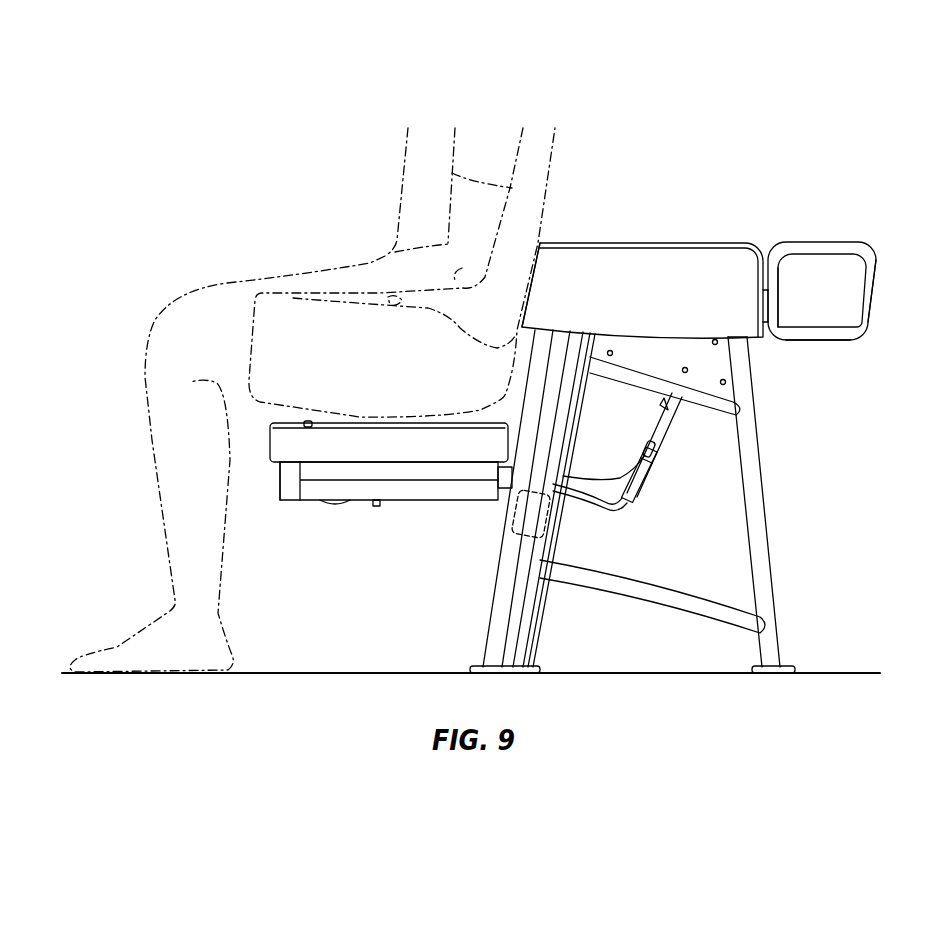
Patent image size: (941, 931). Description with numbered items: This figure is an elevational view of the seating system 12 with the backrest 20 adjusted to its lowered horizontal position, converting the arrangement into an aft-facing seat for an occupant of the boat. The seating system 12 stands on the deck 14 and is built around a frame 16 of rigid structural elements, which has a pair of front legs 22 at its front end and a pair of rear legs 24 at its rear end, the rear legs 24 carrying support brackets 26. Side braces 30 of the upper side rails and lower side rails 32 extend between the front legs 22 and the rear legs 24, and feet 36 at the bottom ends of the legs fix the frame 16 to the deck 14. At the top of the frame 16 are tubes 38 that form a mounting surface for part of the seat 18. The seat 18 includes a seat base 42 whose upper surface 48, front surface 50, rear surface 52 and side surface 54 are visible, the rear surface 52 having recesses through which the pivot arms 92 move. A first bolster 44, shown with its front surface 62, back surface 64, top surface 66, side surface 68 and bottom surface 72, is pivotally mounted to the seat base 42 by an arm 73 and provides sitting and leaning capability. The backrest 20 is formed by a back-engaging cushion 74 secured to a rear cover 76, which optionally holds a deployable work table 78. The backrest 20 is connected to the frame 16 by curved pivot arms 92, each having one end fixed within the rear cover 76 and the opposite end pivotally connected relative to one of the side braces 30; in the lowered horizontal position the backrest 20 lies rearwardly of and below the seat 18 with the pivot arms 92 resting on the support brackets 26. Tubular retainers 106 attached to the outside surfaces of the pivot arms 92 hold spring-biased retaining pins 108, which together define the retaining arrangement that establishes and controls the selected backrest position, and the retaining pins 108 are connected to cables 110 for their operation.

The seating system 12 is at (762, 157).
The deck 14 is at (370, 672).
The frame 16 is at (779, 512).
The seat 18 is at (761, 225).
The backrest 20 is at (303, 510).
The front legs 22 is at (768, 578).
The rear legs 24 is at (507, 617).
The support brackets 26 is at (512, 500).
The side braces 30 is at (705, 357).
The lower side rails 32 is at (700, 600).
The feet 36 is at (532, 662).
The tubes 38 is at (757, 365).
The seat base 42 is at (682, 235).
The first bolster 44 is at (848, 230).
The upper surface 48 is at (630, 242).
The front surface 50 is at (755, 283).
The rear surface 52 is at (532, 290).
The side surface 54 is at (643, 310).
The front surface 62 is at (880, 297).
The back surface 64 is at (780, 271).
The top surface 66 is at (815, 240).
The side surface 68 is at (843, 268).
The bottom surface 72 is at (838, 341).
The arm 73 is at (768, 305).
The back-engaging cushion 74 is at (278, 450).
The rear cover 76 is at (422, 473).
The work table 78 is at (408, 502).
The pivot arms 92 is at (675, 420).
The tubular retainers 106 is at (637, 475).
The retaining pins 108 is at (647, 458).
The cables 110 is at (605, 507).